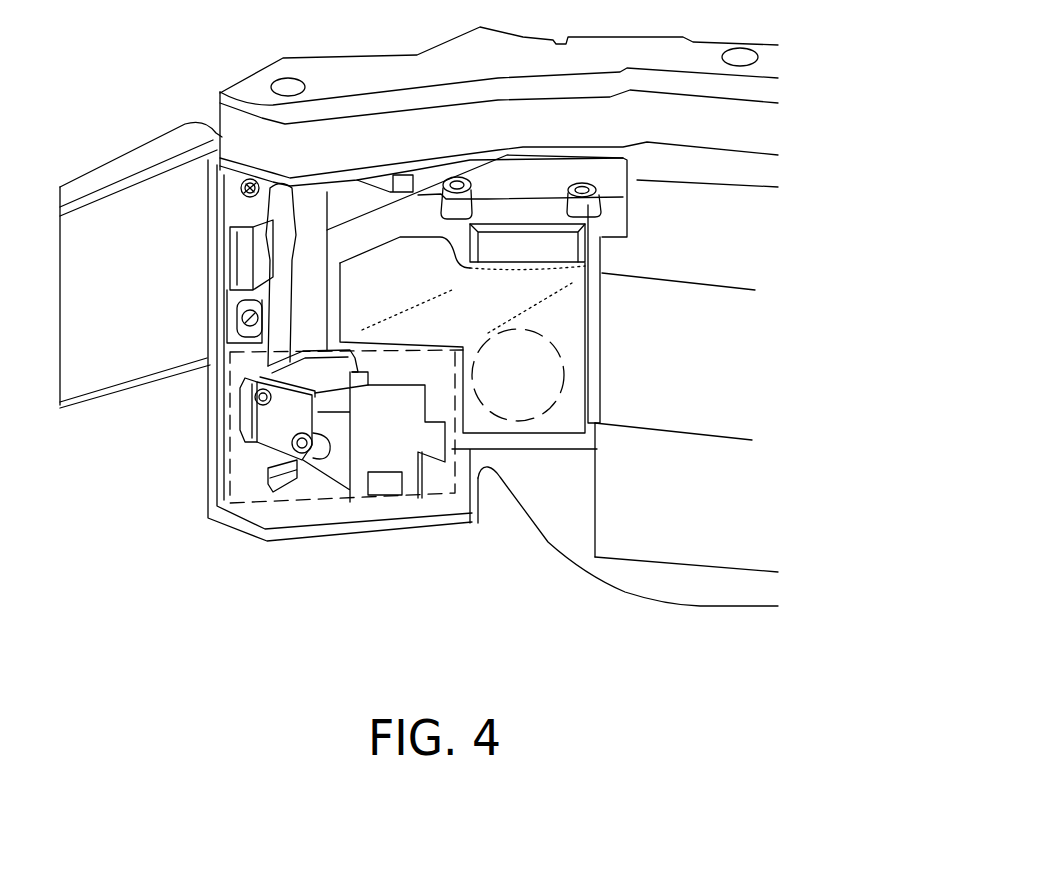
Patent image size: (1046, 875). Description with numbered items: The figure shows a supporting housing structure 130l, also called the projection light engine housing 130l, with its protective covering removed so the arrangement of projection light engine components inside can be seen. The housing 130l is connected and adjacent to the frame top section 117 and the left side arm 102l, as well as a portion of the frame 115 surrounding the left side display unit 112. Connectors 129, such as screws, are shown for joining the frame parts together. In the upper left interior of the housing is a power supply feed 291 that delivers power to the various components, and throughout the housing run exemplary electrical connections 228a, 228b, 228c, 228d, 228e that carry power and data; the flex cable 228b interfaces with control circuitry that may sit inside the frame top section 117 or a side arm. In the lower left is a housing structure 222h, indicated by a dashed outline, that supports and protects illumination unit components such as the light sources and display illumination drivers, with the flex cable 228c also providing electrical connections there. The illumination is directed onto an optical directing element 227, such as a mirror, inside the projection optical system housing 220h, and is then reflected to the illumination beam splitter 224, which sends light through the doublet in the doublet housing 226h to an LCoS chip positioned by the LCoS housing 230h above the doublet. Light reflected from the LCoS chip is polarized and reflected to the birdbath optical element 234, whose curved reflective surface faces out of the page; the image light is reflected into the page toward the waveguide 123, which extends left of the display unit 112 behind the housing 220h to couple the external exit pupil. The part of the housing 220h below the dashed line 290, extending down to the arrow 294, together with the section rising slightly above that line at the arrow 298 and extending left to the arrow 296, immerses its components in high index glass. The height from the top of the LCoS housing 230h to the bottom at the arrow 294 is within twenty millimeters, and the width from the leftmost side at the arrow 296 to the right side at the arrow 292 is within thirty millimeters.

The left side arm 102l is at (98, 237).
The left side display unit 112 is at (640, 553).
The frame 115 is at (550, 523).
The frame top section 117 is at (328, 88).
The waveguide 123 is at (705, 276).
The connectors 129 is at (287, 80).
The supporting housing structure 130l is at (200, 402).
The projection optical system housing 220h is at (453, 262).
The housing structure 222h is at (327, 520).
The illumination beam splitter 224 is at (508, 322).
The doublet housing 226h is at (527, 243).
The optical directing element 227 is at (365, 328).
The electrical connection 228a is at (305, 275).
The flex cable 228b is at (393, 182).
The flex cable 228c is at (363, 440).
The electrical connection 228d is at (277, 487).
The electrical connection 228e is at (383, 507).
The LCoS housing 230h is at (477, 196).
The birdbath optical element 234 is at (560, 360).
The dashed line 290 is at (578, 274).
The power supply feed 291 is at (267, 253).
The arrow 292 is at (600, 325).
The arrow 294 is at (503, 455).
The arrow 296 is at (325, 310).
The arrow 298 is at (418, 240).